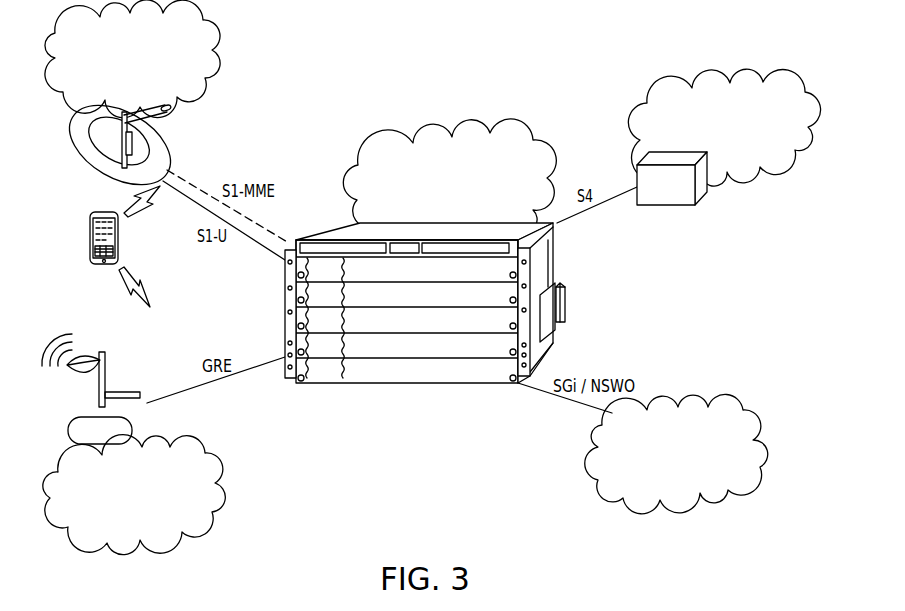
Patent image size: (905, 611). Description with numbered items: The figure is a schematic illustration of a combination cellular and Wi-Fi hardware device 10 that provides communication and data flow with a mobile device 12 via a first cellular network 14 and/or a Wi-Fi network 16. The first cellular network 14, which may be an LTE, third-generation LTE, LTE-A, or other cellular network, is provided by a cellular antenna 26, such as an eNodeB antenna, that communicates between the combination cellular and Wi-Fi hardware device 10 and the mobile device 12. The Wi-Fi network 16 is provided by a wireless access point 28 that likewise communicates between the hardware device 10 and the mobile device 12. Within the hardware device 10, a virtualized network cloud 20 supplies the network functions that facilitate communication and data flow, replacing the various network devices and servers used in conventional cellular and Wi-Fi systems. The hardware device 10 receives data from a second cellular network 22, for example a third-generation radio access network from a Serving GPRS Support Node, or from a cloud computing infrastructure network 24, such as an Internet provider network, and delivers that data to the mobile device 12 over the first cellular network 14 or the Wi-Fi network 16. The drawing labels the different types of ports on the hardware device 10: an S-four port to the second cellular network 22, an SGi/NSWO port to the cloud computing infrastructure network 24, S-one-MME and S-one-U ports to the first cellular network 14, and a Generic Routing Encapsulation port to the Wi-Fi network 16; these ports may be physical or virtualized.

The combination cellular and Wi-Fi hardware device 10 is at (430, 412).
The mobile device 12 is at (85, 268).
The first cellular network 14 is at (215, 76).
The Wi-Fi network 16 is at (227, 513).
The virtualized network cloud 20 is at (537, 130).
The second cellular network 22 is at (757, 182).
The cloud computing infrastructure network 24 is at (767, 468).
The cellular antenna 26 is at (130, 140).
The wireless access point 28 is at (107, 382).